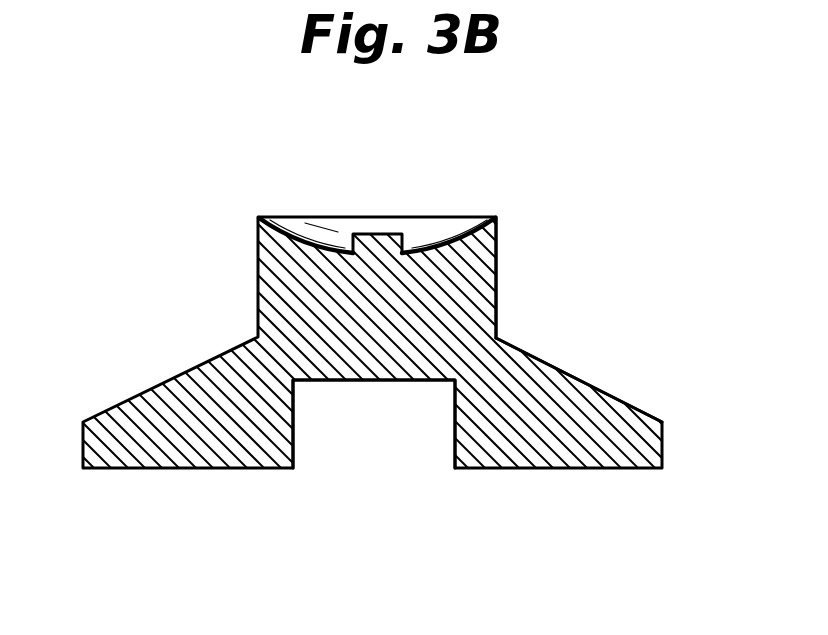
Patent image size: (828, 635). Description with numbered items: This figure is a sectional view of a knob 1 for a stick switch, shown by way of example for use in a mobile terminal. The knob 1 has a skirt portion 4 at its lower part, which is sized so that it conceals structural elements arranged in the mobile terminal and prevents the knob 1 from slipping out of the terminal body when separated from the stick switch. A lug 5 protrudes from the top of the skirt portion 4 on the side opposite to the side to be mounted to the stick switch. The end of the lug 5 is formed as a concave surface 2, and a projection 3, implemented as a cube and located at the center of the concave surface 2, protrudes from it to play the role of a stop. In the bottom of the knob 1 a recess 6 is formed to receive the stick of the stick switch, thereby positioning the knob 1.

The knob 1 is at (548, 470).
The concave surface 2 is at (448, 240).
The projection 3 is at (364, 252).
The skirt portion 4 is at (604, 388).
The lug 5 is at (497, 283).
The recess 6 is at (378, 435).